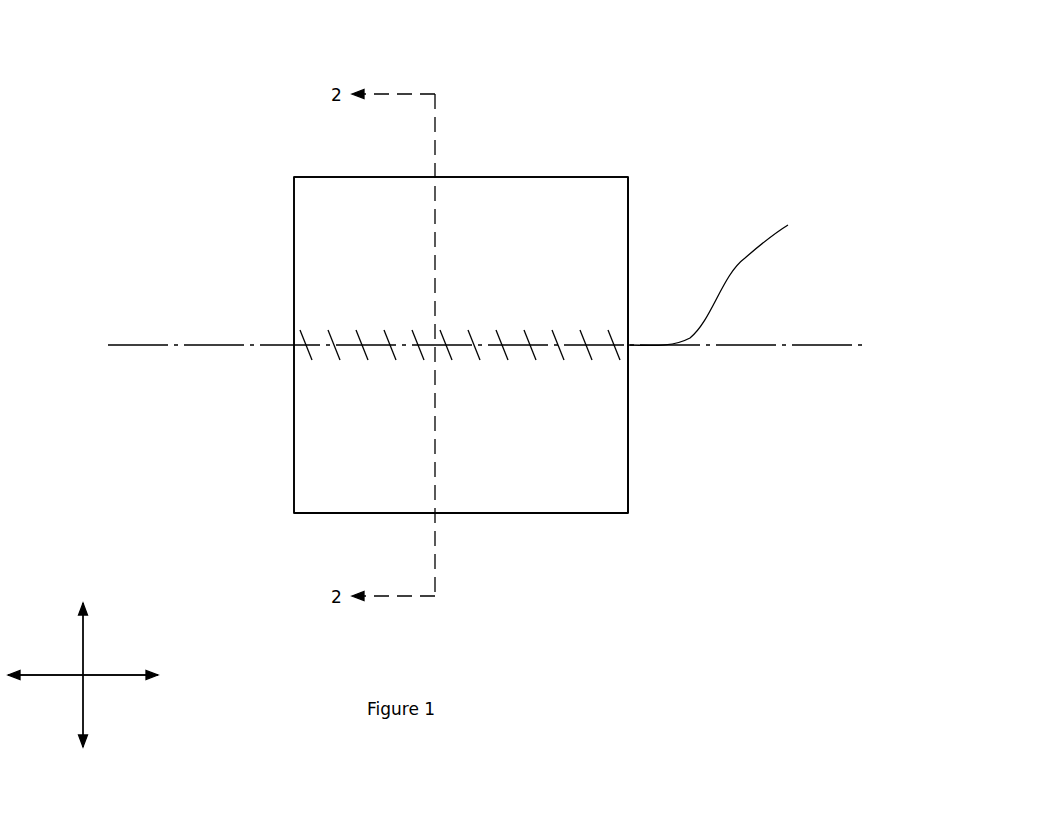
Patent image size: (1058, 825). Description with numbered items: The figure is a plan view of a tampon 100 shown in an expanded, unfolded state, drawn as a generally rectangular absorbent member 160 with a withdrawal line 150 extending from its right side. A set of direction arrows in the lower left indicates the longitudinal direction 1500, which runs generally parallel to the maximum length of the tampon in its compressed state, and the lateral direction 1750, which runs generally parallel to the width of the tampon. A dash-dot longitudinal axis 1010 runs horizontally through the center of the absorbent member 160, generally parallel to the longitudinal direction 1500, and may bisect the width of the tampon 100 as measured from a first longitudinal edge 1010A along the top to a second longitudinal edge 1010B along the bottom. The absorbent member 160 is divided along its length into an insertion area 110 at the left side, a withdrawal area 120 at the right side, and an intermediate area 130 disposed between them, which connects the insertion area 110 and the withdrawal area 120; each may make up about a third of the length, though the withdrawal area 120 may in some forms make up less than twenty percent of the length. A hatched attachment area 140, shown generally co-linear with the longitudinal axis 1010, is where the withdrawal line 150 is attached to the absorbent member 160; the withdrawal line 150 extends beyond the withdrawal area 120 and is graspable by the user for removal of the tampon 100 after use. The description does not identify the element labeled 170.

The tampon 100 is at (640, 72).
The insertion area 110 is at (293, 253).
The withdrawal area 120 is at (630, 260).
The intermediate area 130 is at (457, 514).
The attachment area 140 is at (372, 331).
The withdrawal line 150 is at (765, 248).
The absorbent member 160 is at (626, 463).
The body 170 is at (580, 230).
The longitudinal axis 1010 is at (787, 345).
The first longitudinal edge 1010A is at (562, 177).
The second longitudinal edge 1010B is at (562, 513).
The longitudinal direction 1500 is at (108, 677).
The lateral direction 1750 is at (87, 645).